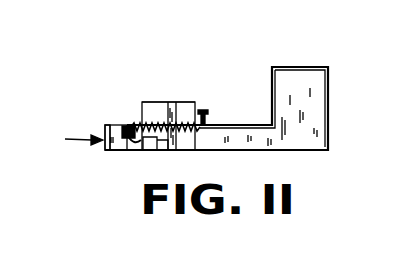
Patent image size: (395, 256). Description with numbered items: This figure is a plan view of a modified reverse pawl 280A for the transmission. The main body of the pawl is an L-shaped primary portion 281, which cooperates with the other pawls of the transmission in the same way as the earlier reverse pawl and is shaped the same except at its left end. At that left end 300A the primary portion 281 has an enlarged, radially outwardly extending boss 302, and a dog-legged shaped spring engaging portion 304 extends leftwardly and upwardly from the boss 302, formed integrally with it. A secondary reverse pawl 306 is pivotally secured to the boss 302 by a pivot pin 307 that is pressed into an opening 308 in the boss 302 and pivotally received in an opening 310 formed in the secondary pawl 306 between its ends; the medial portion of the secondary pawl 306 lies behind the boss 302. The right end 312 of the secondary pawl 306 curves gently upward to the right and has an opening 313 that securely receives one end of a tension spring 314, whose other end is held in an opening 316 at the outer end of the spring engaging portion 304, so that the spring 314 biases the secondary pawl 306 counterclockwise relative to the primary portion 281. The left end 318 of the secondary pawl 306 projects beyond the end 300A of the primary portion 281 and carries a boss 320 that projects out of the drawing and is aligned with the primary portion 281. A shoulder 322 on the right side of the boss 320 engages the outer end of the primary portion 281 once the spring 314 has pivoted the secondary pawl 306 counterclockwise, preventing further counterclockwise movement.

The reverse pawl 280A is at (256, 67).
The primary portion 281 is at (262, 150).
The boss 302 is at (198, 140).
The left end 300A is at (127, 150).
The spring engaging portion 304 is at (122, 126).
The secondary reverse pawl 306 is at (65, 138).
The pivot pin 307 is at (164, 101).
The opening 308 is at (160, 150).
The opening 310 is at (181, 100).
The right end 312 is at (206, 121).
The opening 313 is at (201, 109).
The tension spring 314 is at (187, 103).
The opening 316 is at (127, 123).
The left end 318 is at (103, 128).
The boss 320 is at (108, 148).
The shoulder 322 is at (145, 150).